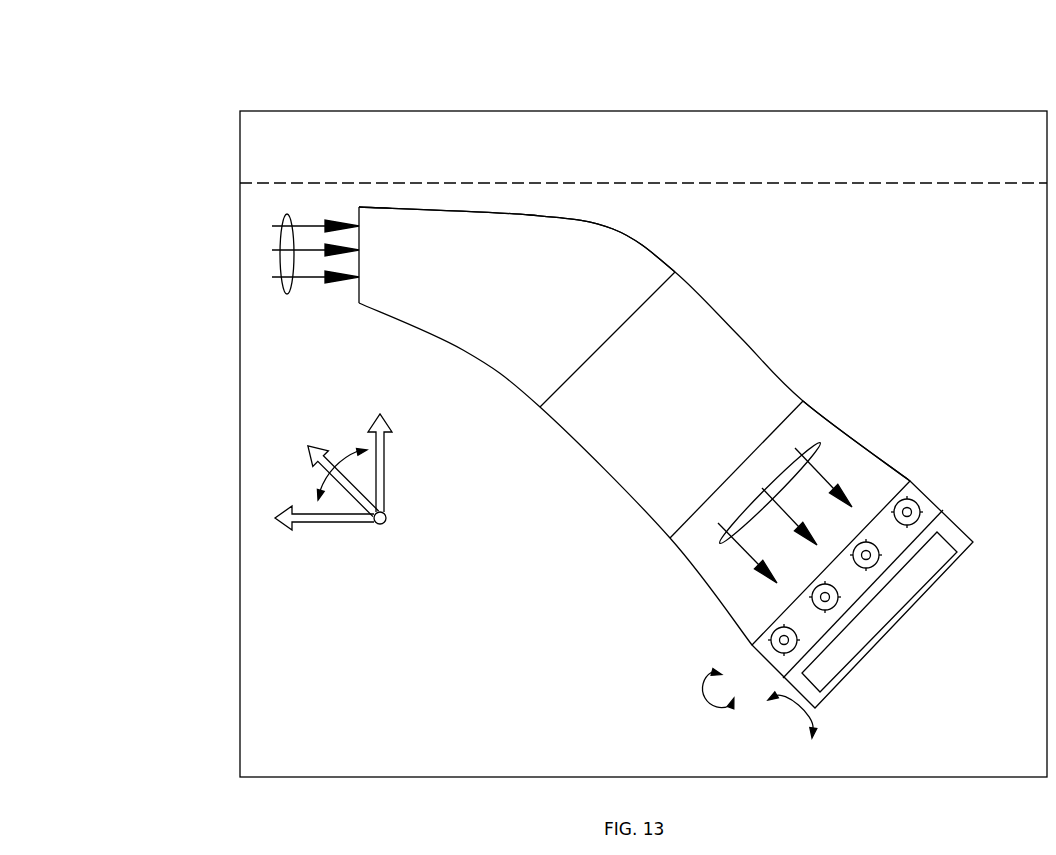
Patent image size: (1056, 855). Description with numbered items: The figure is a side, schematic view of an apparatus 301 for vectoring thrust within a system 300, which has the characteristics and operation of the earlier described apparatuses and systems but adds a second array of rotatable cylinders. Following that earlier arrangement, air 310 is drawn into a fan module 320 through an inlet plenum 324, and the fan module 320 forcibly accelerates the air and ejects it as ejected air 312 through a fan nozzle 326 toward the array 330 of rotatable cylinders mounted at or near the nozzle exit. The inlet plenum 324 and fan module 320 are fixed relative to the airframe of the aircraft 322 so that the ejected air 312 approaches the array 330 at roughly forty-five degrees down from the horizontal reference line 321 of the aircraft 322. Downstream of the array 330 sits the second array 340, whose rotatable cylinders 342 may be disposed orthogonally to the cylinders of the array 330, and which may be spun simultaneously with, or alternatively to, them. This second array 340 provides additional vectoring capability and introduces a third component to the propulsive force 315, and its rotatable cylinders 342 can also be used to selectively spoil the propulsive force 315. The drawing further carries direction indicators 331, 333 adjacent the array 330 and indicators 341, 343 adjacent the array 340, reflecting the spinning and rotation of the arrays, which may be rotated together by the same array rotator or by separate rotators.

The system 300 is at (213, 69).
The apparatus for vectoring thrust 301 is at (857, 266).
The incoming air flow 310 is at (287, 294).
The exhaust flow 312 is at (722, 541).
The propulsive force 315 is at (303, 408).
The duct 320 is at (588, 457).
The reference plane (dashed line) 321 is at (769, 184).
The housing region 322 is at (399, 667).
The duct upper wall 324 is at (613, 228).
The duct end wall portion 326 is at (858, 440).
The array 330 is at (858, 576).
The sensors 331 is at (819, 583).
The rotation direction 333 is at (738, 689).
The second array 340 is at (908, 564).
The translation direction 341 is at (791, 739).
The rotatable cylinders 342 is at (928, 568).
The translation direction 343 is at (777, 710).